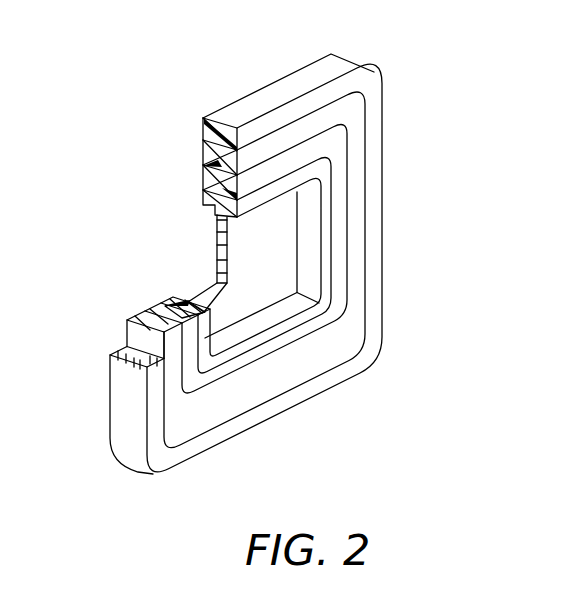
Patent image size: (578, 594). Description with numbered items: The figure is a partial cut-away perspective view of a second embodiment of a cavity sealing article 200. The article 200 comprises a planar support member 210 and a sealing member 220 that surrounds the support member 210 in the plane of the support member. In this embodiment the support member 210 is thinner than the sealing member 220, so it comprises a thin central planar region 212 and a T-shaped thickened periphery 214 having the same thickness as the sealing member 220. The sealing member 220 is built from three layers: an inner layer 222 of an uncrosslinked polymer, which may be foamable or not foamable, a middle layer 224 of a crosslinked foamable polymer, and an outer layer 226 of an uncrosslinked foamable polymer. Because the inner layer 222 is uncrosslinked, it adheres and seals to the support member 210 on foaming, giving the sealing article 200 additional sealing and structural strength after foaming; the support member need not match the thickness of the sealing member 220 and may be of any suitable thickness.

The cavity sealing article 200 is at (138, 144).
The planar support member 210 is at (180, 268).
The central planar region 212 is at (243, 237).
The T-shaped thickened periphery 214 is at (178, 309).
The sealing member 220 is at (250, 68).
The inner layer 222 is at (337, 192).
The middle layer 224 is at (353, 123).
The outer layer 226 is at (363, 85).